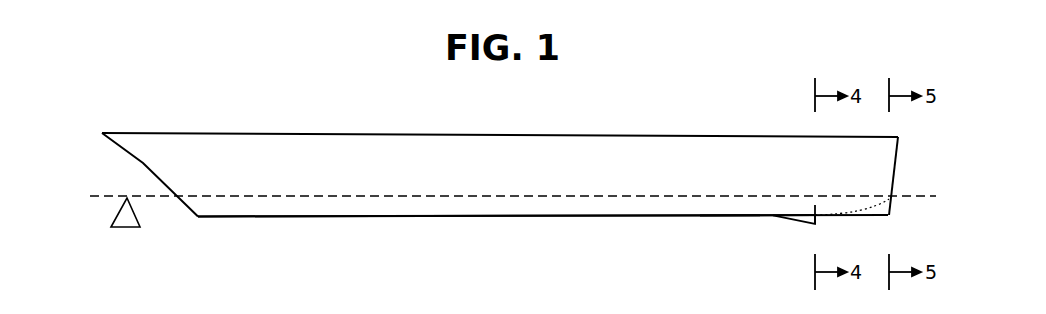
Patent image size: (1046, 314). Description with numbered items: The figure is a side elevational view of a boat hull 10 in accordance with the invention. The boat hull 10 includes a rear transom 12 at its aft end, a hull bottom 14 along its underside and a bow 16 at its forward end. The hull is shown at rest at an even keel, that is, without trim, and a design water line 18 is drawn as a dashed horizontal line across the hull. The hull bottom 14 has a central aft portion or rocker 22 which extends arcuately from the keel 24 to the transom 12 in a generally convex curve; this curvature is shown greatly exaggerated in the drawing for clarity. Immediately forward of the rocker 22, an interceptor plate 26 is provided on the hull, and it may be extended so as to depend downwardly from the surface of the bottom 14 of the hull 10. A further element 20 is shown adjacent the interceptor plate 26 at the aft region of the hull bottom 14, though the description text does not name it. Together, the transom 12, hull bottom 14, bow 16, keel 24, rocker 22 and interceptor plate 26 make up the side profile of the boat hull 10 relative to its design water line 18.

The boat hull 10 is at (377, 145).
The rear transom 12 is at (896, 171).
The hull bottom 14 is at (585, 205).
The bow 16 is at (143, 163).
The design water line 18 is at (161, 197).
The wedge / trim member 20 is at (793, 221).
The rocker 22 is at (867, 215).
The keel 24 is at (710, 217).
The interceptor plate 26 is at (817, 212).